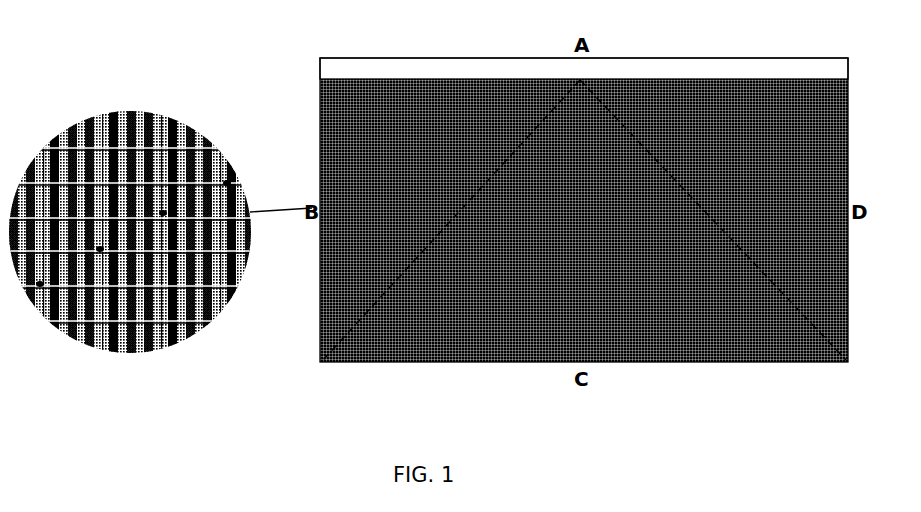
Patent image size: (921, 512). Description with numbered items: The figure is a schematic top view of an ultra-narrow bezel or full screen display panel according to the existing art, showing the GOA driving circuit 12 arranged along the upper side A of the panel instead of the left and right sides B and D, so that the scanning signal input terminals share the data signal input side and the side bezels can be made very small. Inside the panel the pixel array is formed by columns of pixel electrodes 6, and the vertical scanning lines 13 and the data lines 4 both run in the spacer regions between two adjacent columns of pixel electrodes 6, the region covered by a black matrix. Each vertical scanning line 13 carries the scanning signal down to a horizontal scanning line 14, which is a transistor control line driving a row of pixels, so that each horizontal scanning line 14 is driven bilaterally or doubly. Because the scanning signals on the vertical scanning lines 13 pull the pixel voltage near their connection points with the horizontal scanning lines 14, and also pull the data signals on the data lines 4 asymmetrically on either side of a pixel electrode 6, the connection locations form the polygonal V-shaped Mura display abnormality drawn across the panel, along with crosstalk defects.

The GOA driving circuit 12 is at (706, 74).
The pixel electrode 6 is at (88, 116).
The vertical scanning line 13 is at (158, 114).
The data line 4 is at (170, 118).
The horizontal scanning line 14 is at (208, 140).